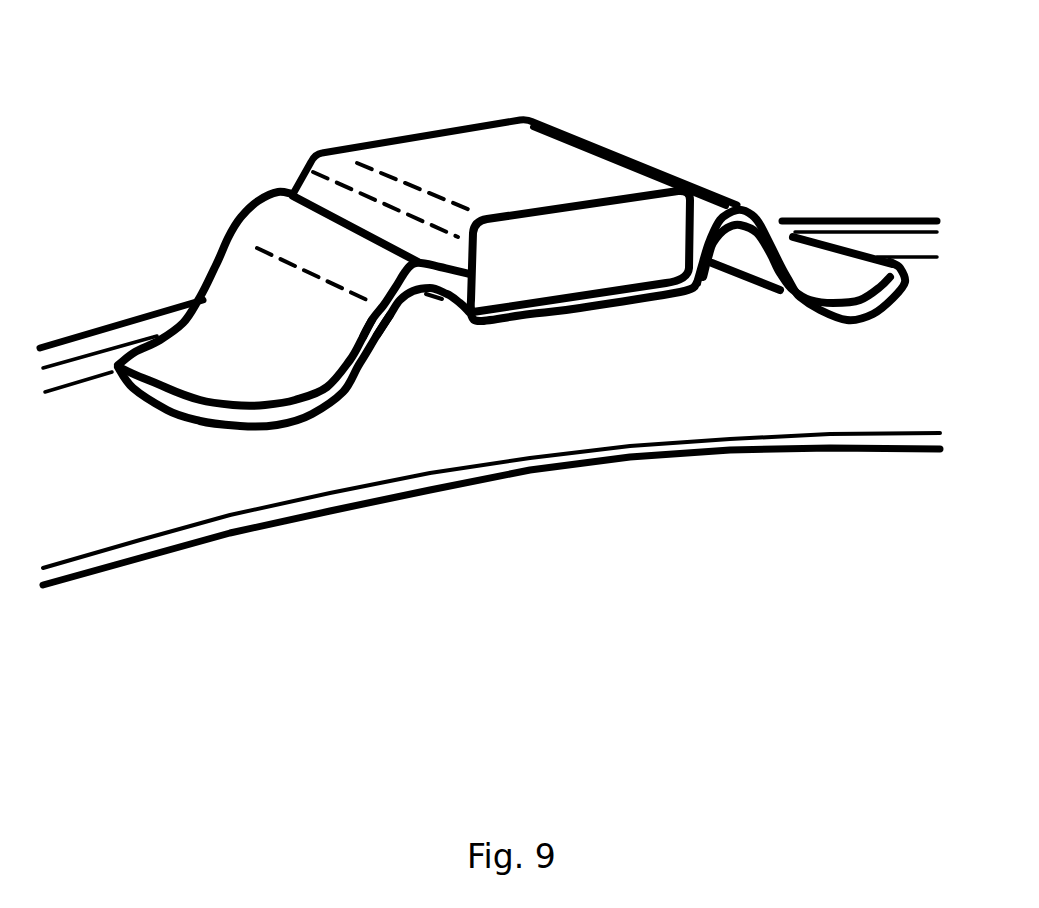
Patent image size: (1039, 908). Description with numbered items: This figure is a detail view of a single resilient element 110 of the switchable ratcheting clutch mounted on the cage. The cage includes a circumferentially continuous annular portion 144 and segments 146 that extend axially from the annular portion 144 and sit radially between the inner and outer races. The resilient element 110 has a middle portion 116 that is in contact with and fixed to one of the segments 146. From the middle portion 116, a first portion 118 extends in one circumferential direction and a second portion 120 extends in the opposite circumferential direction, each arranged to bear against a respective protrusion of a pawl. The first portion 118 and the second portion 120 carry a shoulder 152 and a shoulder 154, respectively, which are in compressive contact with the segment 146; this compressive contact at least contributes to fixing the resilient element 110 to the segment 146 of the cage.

The resilient element 110 is at (507, 281).
The middle portion 116 is at (530, 323).
The portion 118 is at (248, 287).
The portion 120 is at (843, 277).
The circumferentially continuous annular portion 144 is at (88, 395).
The segment 146 is at (447, 157).
The shoulder 152 is at (283, 224).
The shoulder 154 is at (703, 197).